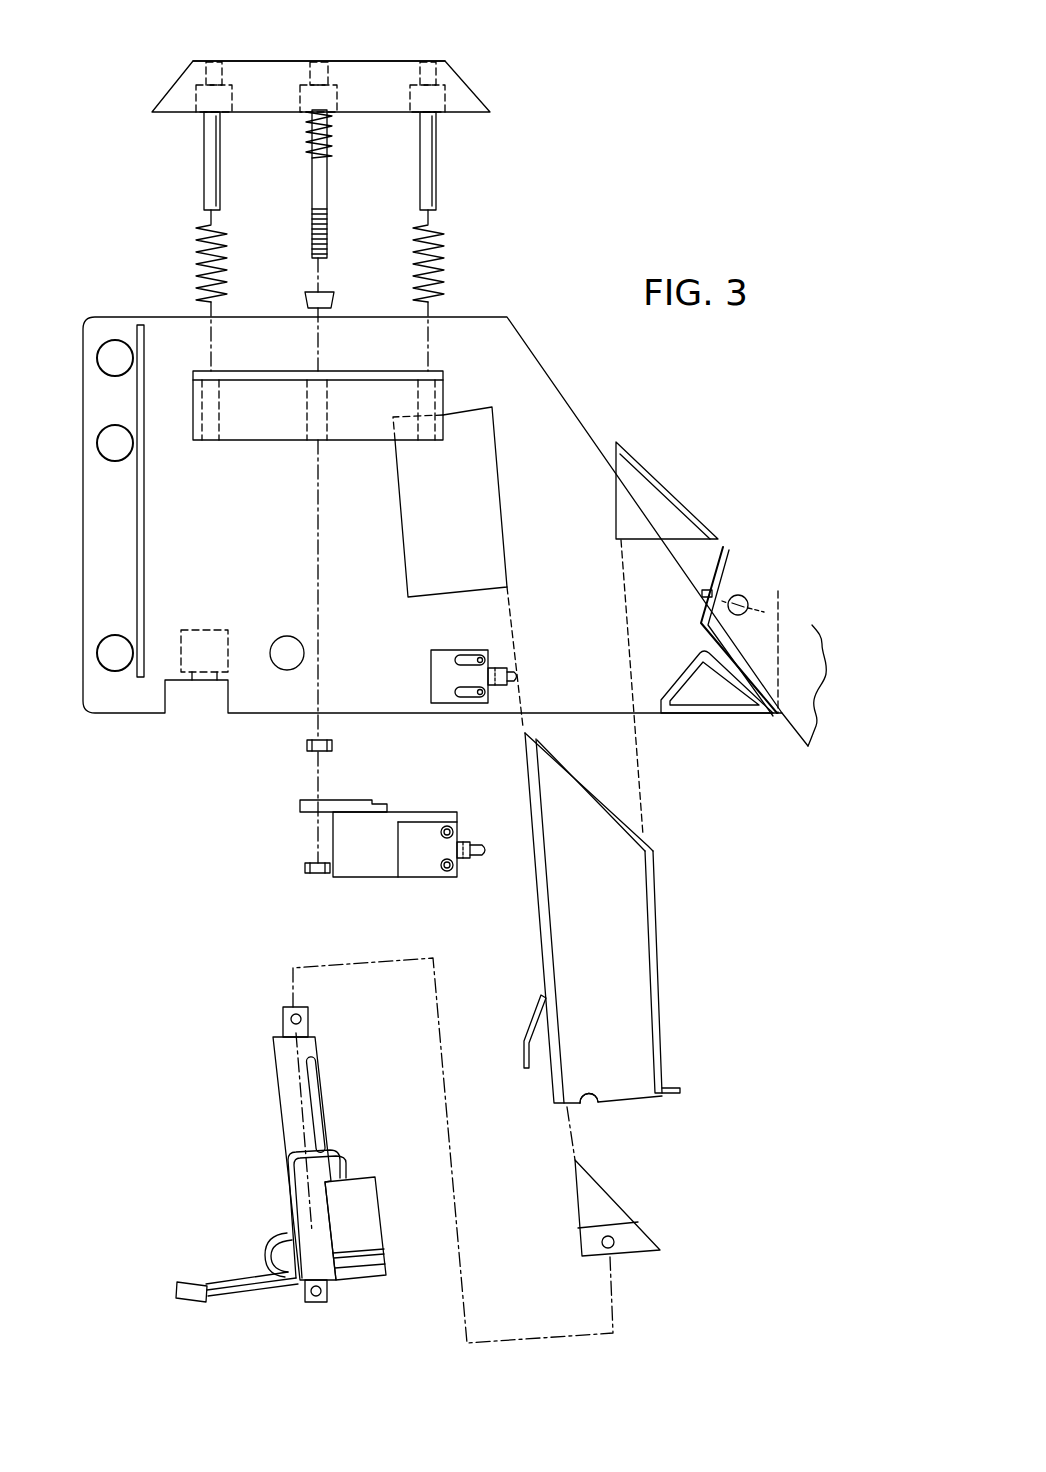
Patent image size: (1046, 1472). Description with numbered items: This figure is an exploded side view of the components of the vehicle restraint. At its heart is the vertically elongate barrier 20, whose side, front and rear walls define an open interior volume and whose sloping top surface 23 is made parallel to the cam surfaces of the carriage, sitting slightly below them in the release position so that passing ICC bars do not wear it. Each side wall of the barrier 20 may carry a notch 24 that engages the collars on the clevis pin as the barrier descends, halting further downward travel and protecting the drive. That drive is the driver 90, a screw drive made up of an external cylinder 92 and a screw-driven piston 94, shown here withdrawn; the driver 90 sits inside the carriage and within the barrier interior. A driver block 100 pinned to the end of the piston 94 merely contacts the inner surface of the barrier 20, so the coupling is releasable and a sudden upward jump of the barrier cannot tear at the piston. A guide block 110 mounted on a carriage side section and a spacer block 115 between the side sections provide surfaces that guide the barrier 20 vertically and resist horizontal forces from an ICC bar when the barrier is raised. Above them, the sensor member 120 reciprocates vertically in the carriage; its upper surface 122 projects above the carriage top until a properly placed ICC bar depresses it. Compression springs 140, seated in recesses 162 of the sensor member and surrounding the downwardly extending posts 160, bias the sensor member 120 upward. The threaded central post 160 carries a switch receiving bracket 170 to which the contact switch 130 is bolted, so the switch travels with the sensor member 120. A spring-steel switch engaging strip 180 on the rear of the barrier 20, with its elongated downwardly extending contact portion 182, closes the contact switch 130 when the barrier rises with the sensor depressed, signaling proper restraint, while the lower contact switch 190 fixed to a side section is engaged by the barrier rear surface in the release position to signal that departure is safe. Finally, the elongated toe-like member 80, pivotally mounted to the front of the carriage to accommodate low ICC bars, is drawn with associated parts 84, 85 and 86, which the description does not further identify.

The vertical barrier 20 is at (636, 948).
The sloping top surface 23 is at (635, 838).
The notch 24 is at (592, 1097).
The toe-like member 80 is at (807, 630).
The mounting screw 84 is at (745, 598).
The triangular bracket 85 is at (729, 701).
The angled bracket 86 is at (752, 693).
The driver 90 is at (264, 1133).
The external cylinder 92 is at (287, 1137).
The screw-driven piston 94 is at (287, 1020).
The driver block 100 is at (605, 1208).
The guide block 110 is at (492, 450).
The spacer block 115 is at (663, 499).
The sensor member 120 is at (383, 97).
The upper surface 122 is at (233, 60).
The contact switch 130 is at (478, 865).
The compression springs 140 is at (203, 258).
The posts 160 is at (207, 177).
The recesses 162 is at (445, 103).
The switch receiving bracket 170 is at (367, 870).
The switch engaging strip 180 is at (527, 1006).
The contact portion 182 is at (525, 1058).
The lower contact switch 190 is at (443, 697).